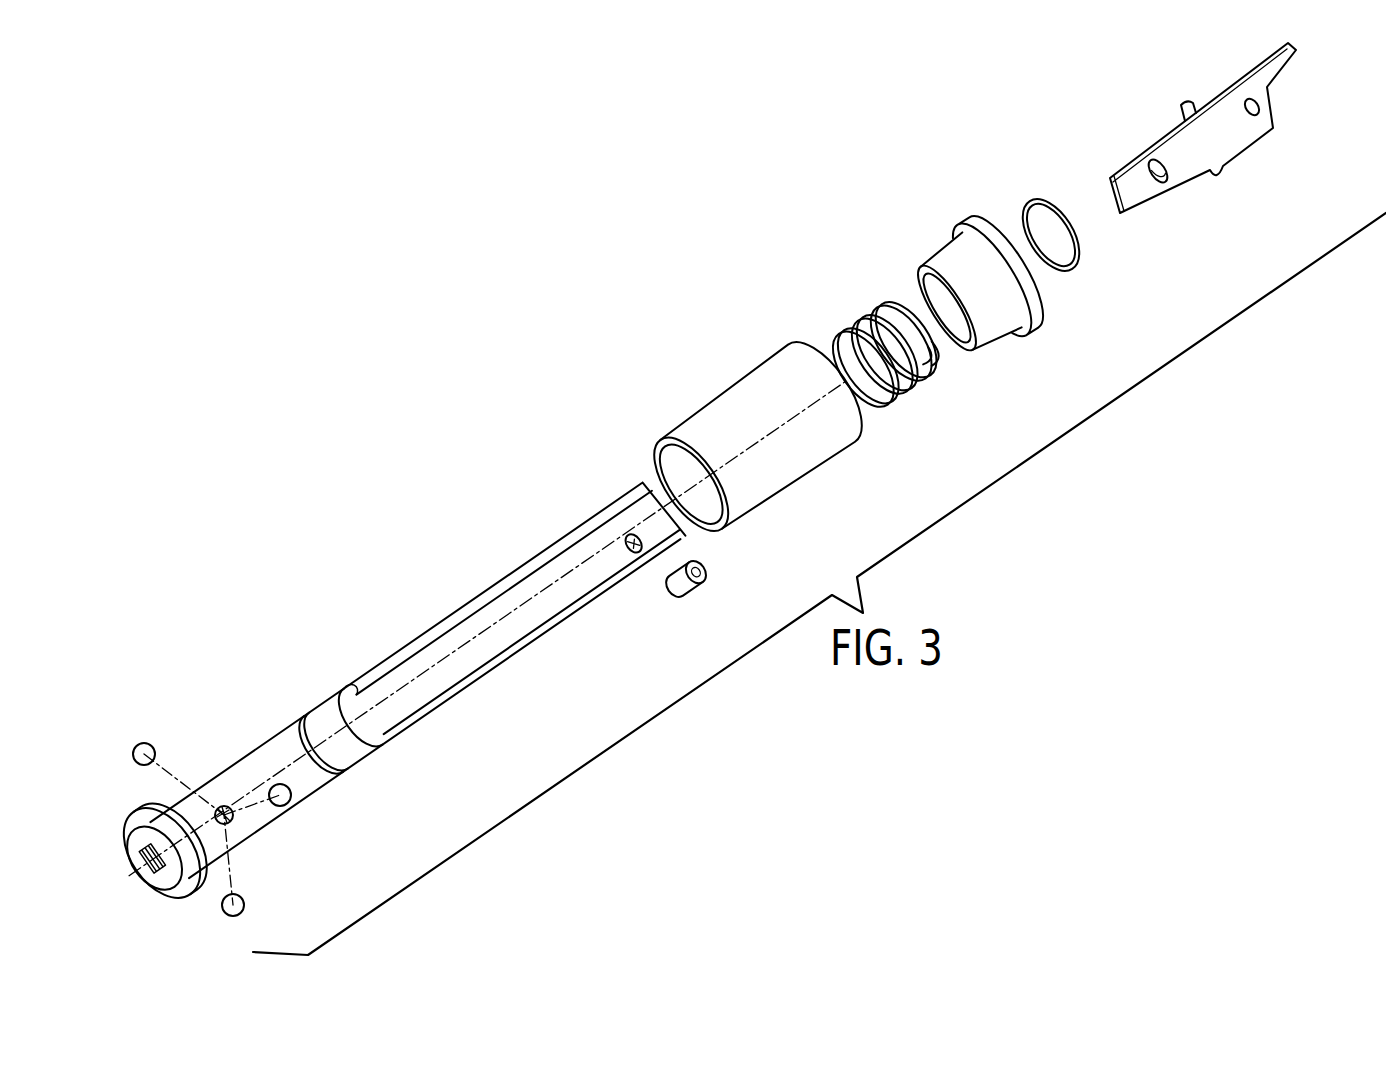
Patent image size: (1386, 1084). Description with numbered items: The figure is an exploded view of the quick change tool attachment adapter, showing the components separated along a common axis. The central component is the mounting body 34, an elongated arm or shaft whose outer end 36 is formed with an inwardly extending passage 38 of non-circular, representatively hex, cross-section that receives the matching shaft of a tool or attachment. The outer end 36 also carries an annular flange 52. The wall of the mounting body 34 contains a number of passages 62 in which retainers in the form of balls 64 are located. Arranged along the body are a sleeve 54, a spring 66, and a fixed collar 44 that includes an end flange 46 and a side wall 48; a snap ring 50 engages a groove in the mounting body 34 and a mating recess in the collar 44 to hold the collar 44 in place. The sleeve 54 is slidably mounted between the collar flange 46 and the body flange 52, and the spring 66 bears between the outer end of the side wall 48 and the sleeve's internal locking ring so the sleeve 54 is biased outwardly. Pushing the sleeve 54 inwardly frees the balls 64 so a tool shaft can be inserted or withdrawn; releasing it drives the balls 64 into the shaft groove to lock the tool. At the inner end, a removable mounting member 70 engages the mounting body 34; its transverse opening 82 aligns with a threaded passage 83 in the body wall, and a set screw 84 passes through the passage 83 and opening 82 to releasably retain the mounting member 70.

The mounting body 34 is at (497, 669).
The outer end of mounting body 36 is at (184, 893).
The passage 38 is at (146, 858).
The fixed collar 44 is at (960, 282).
The end flange 46 is at (963, 223).
The side wall 48 is at (937, 265).
The snap ring 50 is at (1040, 200).
The annular flange 52 is at (199, 895).
The sleeve 54 is at (798, 490).
The passages 62 is at (222, 807).
The balls 64 is at (185, 722).
The spring 66 is at (905, 395).
The mounting member 70 is at (1247, 148).
The transverse opening 82 is at (1150, 180).
The threaded passage 83 is at (632, 556).
The set screw 84 is at (685, 585).